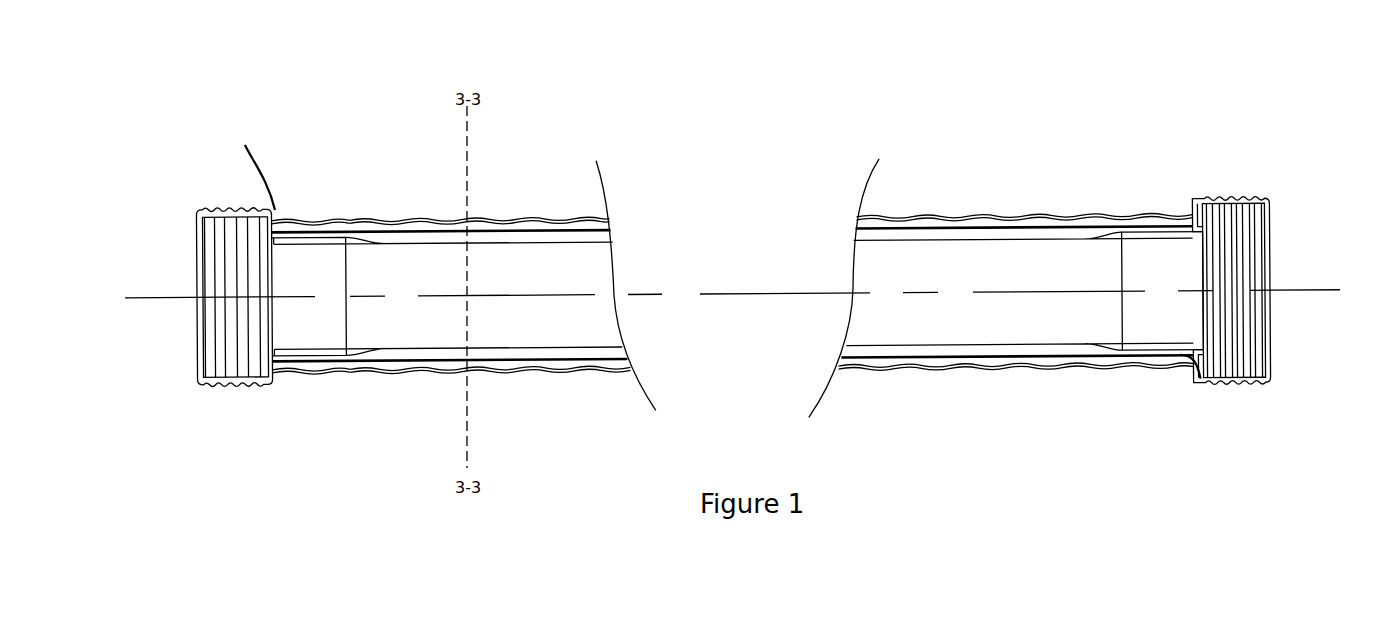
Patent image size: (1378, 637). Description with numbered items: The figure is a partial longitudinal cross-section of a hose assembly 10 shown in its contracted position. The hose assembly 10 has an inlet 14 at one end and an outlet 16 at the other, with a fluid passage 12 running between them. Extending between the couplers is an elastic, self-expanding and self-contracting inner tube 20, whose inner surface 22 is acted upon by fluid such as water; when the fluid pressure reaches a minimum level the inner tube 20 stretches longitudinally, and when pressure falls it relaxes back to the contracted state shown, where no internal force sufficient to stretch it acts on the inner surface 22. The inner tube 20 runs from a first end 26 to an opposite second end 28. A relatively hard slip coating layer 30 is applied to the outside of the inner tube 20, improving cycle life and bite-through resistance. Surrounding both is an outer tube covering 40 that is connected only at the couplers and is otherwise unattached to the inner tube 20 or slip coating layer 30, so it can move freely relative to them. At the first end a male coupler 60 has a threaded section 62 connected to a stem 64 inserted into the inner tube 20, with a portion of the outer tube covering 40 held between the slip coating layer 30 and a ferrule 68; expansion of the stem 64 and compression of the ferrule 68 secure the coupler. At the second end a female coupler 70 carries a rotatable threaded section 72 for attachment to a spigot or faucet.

The hose assembly 10 is at (215, 77).
The fluid passage 12 is at (350, 283).
The inlet 14 is at (1275, 313).
The outlet 16 is at (193, 270).
The inner tube 20 is at (515, 244).
The inner surface 22 is at (508, 345).
The first end 26 is at (245, 167).
The second coupling end 28 is at (1198, 380).
The slip coating layer 30 is at (532, 229).
The outer tube covering 40 is at (397, 214).
The male coupler 60 is at (200, 205).
The threaded section 62 is at (249, 355).
The stem 64 is at (305, 245).
The ferrule 68 is at (327, 218).
The female coupler 70 is at (1233, 196).
The threaded section 72 is at (1272, 204).